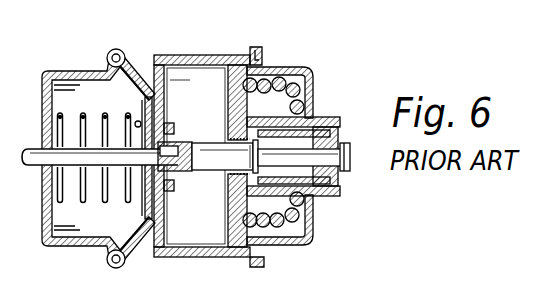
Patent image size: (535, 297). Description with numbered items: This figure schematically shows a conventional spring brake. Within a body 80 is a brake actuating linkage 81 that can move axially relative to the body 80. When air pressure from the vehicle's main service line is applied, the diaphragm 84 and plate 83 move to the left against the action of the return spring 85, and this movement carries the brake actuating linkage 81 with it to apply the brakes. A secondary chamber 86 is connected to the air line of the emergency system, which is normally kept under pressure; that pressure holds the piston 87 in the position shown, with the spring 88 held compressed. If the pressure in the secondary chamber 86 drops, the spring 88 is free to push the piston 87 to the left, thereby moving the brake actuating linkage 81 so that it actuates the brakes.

The body 80 is at (205, 82).
The brake actuating linkage 81 is at (38, 181).
The plate 83 is at (147, 96).
The diaphragm 84 is at (136, 250).
The return spring 85 is at (59, 112).
The secondary chamber 86 is at (228, 57).
The piston 87 is at (272, 70).
The spring 88 is at (314, 85).